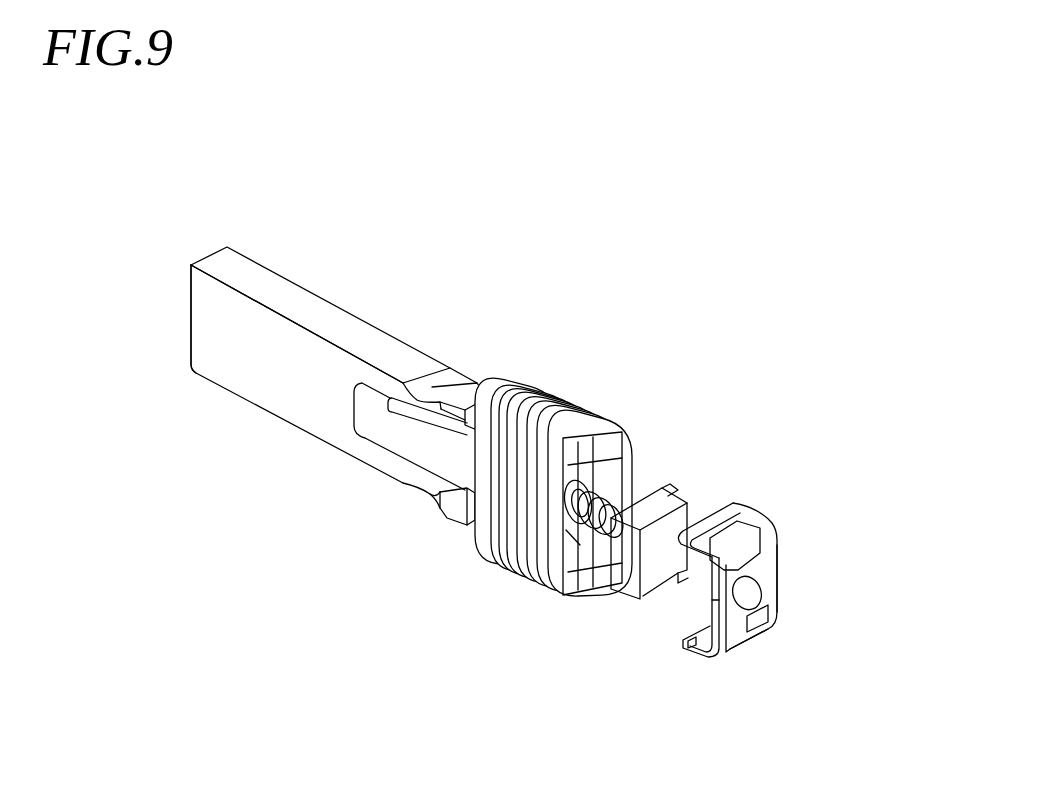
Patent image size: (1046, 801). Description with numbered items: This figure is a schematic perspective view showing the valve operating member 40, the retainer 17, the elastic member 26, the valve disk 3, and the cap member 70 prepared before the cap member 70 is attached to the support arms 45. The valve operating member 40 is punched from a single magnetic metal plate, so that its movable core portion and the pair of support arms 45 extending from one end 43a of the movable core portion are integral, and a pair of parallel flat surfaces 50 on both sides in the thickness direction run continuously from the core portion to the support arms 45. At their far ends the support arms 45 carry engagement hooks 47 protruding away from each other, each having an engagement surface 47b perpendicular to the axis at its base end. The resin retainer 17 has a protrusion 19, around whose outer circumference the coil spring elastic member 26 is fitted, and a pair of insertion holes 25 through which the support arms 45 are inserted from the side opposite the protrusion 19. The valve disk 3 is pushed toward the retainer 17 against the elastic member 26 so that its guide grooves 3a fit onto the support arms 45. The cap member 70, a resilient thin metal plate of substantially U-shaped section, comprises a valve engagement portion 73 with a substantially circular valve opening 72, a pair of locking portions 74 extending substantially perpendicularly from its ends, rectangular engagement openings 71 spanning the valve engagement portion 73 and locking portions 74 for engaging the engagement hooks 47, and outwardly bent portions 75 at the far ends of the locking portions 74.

The valve disk 3 is at (679, 471).
The guide grooves 3a is at (640, 490).
The retainer 17 is at (549, 361).
The protrusion 19 is at (606, 473).
The insertion holes 25 is at (578, 468).
The elastic member 26 is at (540, 587).
The valve operating member 40 is at (196, 241).
The one end of the movable core portion 43a is at (373, 412).
The support arms 45 is at (414, 326).
The engagement hooks 47 is at (498, 372).
The engagement surface 47b is at (440, 393).
The surfaces 50 is at (220, 335).
The cap member 70 is at (800, 598).
The engagement openings 71 is at (740, 517).
The valve opening 72 is at (752, 590).
The valve engagement portion 73 is at (694, 624).
The locking portions 74 is at (793, 531).
The bent portions 75 is at (728, 508).